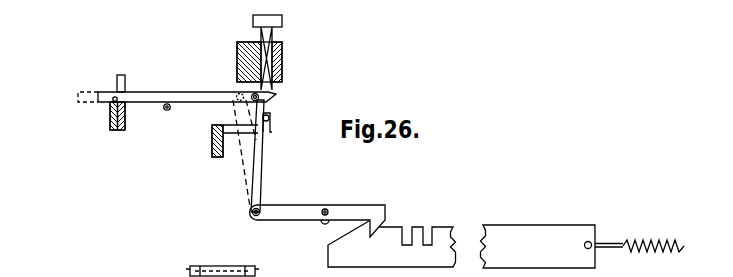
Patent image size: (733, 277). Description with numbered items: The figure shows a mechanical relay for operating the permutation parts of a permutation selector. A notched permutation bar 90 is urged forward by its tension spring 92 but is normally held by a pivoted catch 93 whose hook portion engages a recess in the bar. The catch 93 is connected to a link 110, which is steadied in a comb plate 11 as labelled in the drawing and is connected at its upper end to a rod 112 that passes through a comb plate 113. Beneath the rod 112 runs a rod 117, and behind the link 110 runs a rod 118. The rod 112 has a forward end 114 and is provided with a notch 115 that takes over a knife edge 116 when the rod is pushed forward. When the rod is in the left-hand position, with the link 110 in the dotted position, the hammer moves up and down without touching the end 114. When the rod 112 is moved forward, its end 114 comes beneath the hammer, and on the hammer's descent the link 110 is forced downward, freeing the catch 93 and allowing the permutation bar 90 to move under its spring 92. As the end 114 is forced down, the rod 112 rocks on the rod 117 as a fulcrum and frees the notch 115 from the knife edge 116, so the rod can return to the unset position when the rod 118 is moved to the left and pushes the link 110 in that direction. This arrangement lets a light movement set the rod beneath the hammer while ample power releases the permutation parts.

The stop bracket 11 is at (234, 135).
The permutation bar 90 is at (445, 238).
The tension spring 92 is at (631, 244).
The pivoted catch 93 is at (365, 213).
The link 110 is at (263, 168).
The rod 112 is at (208, 92).
The comb plate 113 is at (122, 76).
The forward end 114 is at (274, 96).
The notch 115 is at (114, 97).
The knife edge 116 is at (111, 120).
The rod 117 is at (165, 110).
The rod 118 is at (271, 122).